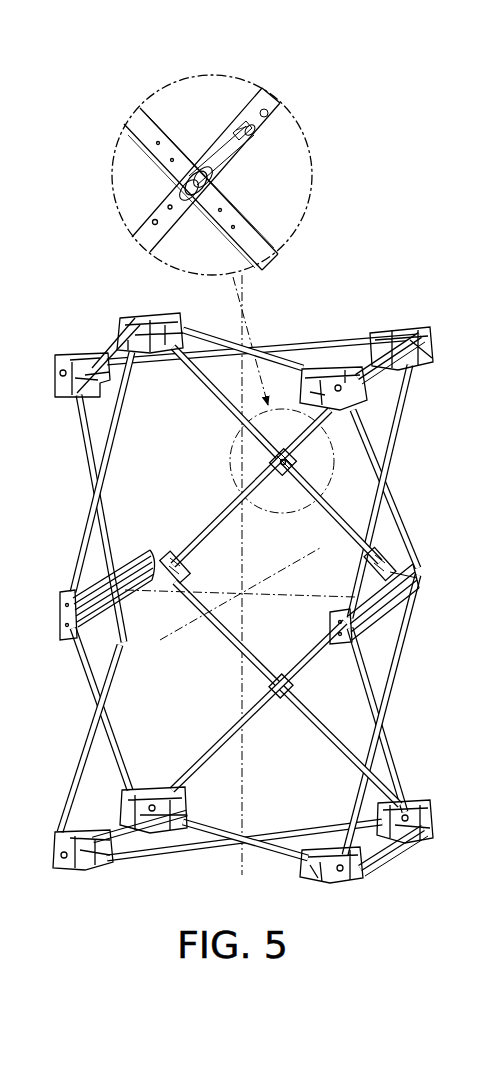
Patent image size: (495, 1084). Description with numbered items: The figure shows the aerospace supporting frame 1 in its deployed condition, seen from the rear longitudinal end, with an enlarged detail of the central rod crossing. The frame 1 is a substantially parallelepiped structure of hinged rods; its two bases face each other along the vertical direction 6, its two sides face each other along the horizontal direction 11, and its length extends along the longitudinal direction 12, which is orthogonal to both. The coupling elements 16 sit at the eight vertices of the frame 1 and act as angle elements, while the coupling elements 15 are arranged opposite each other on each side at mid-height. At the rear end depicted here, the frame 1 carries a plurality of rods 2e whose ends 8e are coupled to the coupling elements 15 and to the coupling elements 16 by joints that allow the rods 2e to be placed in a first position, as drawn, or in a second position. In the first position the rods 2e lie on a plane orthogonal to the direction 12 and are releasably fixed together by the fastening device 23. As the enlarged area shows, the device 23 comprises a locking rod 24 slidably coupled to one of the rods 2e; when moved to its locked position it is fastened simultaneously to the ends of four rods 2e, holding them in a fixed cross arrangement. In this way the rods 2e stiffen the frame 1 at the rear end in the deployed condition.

The aerospace supporting frame 1 is at (372, 288).
The rods 2e is at (160, 110).
The direction 6 is at (253, 773).
The ends 8e is at (187, 367).
The direction 11 is at (317, 593).
The direction 12 is at (167, 637).
The coupling elements 15 is at (152, 583).
The coupling elements 16 is at (130, 313).
The fastening device 23 is at (283, 172).
The locking rod 24 is at (230, 134).